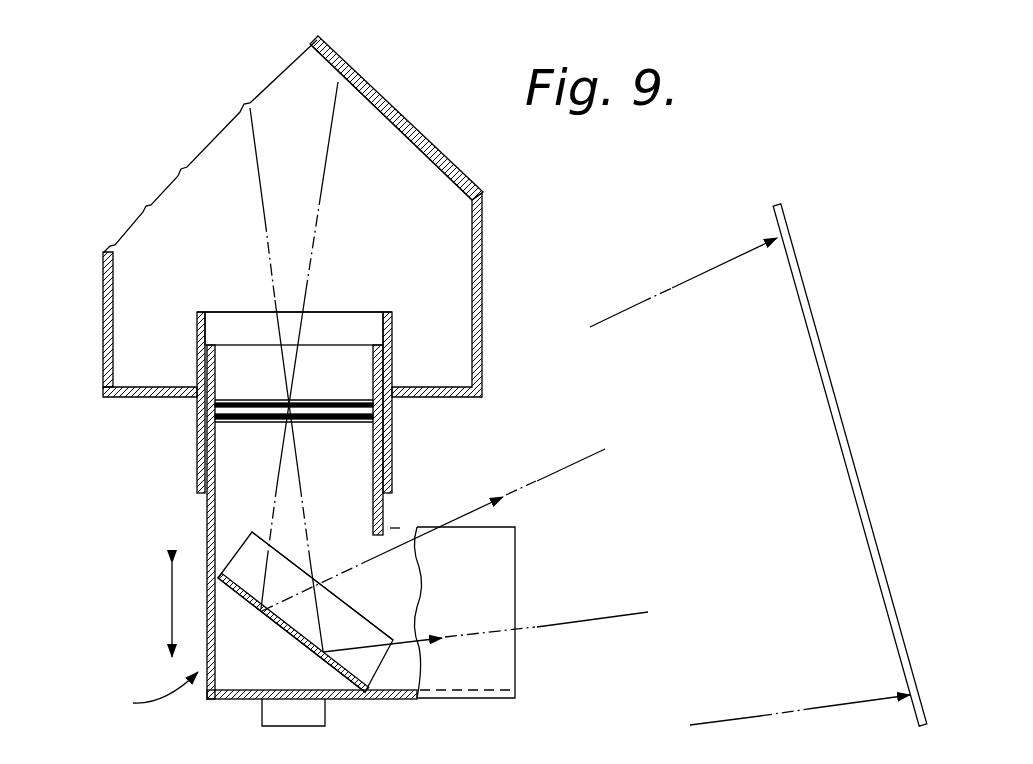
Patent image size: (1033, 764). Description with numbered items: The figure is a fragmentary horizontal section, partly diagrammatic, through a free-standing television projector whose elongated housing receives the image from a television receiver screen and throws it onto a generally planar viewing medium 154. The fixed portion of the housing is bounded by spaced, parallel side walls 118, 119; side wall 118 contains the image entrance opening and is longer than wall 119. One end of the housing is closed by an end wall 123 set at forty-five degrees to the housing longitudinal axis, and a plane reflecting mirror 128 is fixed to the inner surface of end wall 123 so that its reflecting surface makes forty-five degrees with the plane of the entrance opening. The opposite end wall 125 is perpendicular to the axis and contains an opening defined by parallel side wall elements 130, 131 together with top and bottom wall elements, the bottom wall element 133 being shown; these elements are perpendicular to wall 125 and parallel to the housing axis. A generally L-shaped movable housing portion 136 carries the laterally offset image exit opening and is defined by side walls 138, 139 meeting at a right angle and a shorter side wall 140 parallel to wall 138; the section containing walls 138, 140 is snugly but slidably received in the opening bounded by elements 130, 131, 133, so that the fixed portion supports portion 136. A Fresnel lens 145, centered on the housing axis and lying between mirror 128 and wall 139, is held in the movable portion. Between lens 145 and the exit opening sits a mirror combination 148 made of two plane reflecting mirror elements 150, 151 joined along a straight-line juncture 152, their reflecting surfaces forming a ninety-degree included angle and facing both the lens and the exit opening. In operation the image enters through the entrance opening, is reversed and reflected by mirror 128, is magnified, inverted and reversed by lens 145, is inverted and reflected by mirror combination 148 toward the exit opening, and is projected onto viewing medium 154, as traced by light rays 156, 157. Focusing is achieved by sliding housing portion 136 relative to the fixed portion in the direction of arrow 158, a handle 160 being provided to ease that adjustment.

The side wall 118 is at (103, 356).
The side wall 119 is at (484, 269).
The end wall 123 is at (365, 83).
The end wall 125 is at (140, 397).
The plane reflecting mirror 128 is at (423, 158).
The side wall element 130 is at (197, 338).
The side wall element 131 is at (393, 345).
The bottom wall element 133 is at (243, 325).
The movable housing portion 136 is at (137, 691).
The side wall 138 is at (207, 518).
The side wall 139 is at (232, 700).
The side wall 140 is at (388, 513).
The lens 145 is at (353, 378).
The mirror combination 148 is at (342, 603).
The plane reflecting mirror element 150 is at (363, 627).
The plane reflecting mirror element 151 is at (268, 617).
The juncture 152 is at (243, 578).
The viewing medium 154 is at (855, 482).
The light ray 156 is at (260, 193).
The light ray 157 is at (318, 240).
The arrow 158 is at (165, 612).
The handle 160 is at (323, 715).